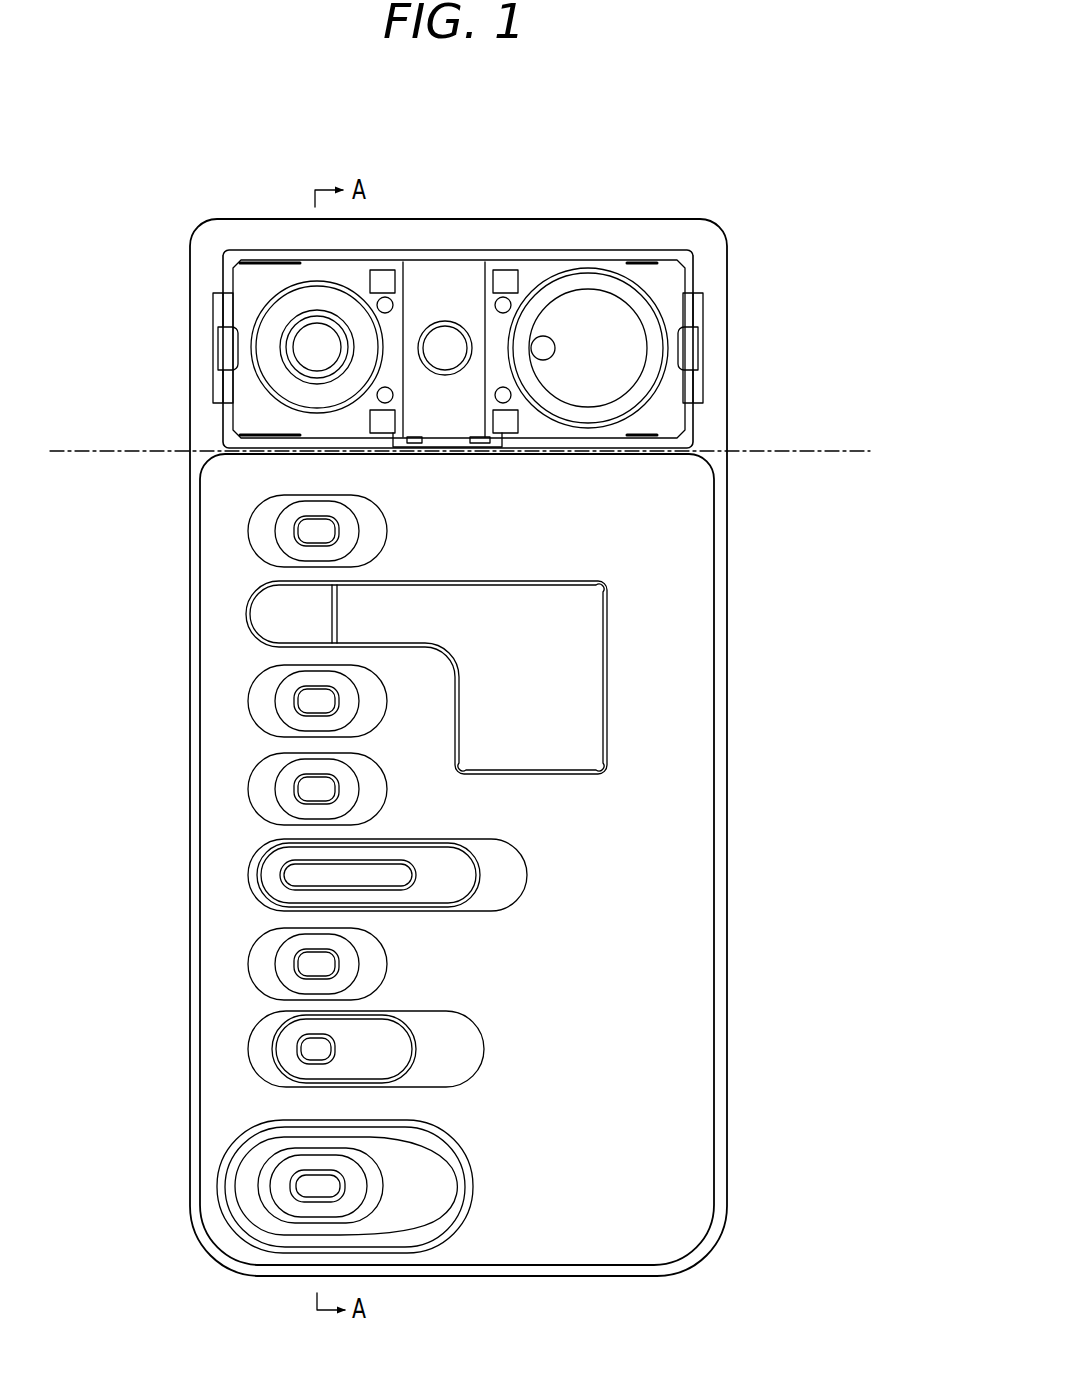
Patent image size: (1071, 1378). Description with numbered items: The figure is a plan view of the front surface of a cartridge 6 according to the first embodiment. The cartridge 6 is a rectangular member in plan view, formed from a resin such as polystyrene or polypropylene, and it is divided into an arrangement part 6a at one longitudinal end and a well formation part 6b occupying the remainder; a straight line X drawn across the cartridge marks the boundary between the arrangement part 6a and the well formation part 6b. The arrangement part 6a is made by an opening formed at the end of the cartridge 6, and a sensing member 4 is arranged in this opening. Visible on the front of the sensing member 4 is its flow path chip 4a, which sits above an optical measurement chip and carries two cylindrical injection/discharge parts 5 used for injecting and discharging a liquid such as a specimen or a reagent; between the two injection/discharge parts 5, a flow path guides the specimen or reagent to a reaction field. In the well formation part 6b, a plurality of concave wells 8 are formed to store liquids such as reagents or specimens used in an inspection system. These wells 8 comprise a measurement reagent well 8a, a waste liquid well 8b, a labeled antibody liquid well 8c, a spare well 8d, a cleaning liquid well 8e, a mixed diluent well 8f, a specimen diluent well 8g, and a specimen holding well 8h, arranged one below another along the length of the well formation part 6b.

The cartridge 6 is at (683, 172).
The arrangement part 6a is at (762, 218).
The well formation part 6b is at (762, 456).
The sensing member 4 is at (398, 316).
The flow path chip 4a is at (265, 298).
The injection/discharge part 5 is at (303, 300).
The straight line X is at (825, 450).
The well 8 is at (120, 516).
The measurement reagent well 8a is at (284, 534).
The waste liquid well 8b is at (284, 619).
The labeled antibody liquid well 8c is at (284, 709).
The spare well 8d is at (284, 796).
The cleaning liquid well 8e is at (274, 874).
The mixed diluent well 8f is at (284, 966).
The specimen diluent well 8g is at (284, 1053).
The specimen holding well 8h is at (284, 1191).